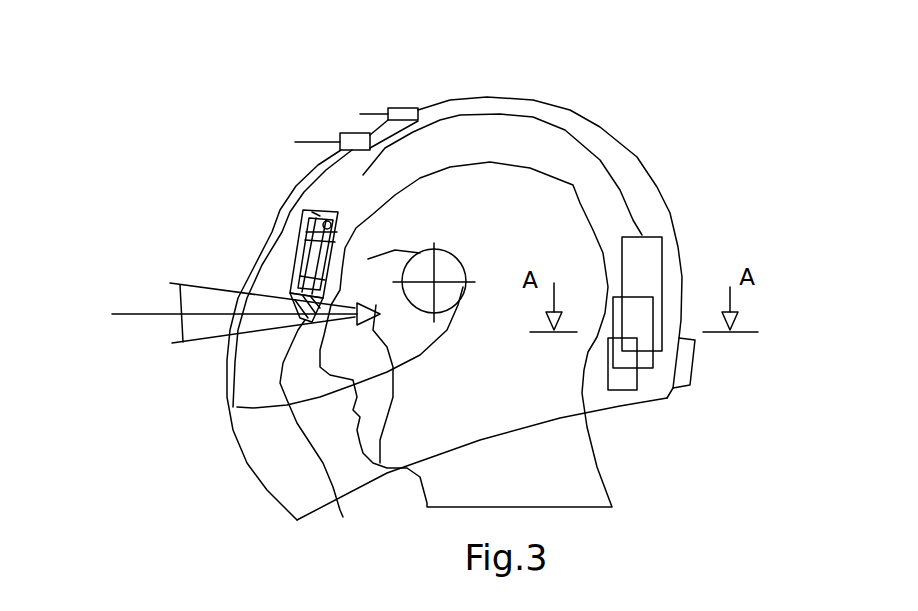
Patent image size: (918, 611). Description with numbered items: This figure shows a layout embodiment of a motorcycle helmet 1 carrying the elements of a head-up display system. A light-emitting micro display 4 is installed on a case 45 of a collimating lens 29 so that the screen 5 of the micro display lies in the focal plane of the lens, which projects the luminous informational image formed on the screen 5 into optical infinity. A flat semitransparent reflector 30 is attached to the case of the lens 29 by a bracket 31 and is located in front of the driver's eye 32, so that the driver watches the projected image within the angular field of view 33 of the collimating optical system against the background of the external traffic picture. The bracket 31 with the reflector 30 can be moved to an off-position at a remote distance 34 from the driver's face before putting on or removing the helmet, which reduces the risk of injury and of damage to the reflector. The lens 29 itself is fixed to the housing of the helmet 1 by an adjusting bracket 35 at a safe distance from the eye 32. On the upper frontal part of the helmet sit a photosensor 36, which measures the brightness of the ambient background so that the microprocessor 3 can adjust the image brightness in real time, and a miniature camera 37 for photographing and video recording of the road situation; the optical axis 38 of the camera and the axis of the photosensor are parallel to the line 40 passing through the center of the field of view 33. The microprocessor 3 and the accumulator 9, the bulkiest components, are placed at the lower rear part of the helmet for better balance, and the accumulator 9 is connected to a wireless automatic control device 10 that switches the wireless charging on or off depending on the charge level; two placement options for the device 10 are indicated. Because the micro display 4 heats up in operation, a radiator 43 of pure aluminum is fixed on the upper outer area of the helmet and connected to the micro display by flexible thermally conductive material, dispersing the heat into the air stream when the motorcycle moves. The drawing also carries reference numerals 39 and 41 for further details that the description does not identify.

The helmet 1 is at (550, 204).
The microprocessor 3 is at (673, 264).
The micro display 4 is at (243, 231).
The screen 5 is at (221, 193).
The accumulator 9 is at (691, 288).
The wireless automatic control device 10 is at (659, 399).
The collimating lens 29 is at (189, 239).
The semitransparent reflector 30 is at (316, 432).
The bracket 31 is at (188, 289).
The driver's eye 32 is at (394, 424).
The angular field of view 33 is at (209, 350).
The remote distance 34 is at (189, 251).
The adjusting bracket 35 is at (196, 204).
The photosensor 36 is at (423, 70).
The miniature camera 37 is at (329, 85).
The optical axis of the camera 38 is at (279, 81).
The fastening pin 39 is at (367, 67).
The line through the center of the angular field of view 40 is at (219, 332).
The attachment element 41 is at (693, 375).
The radiator 43 is at (250, 270).
The case 45 is at (200, 204).